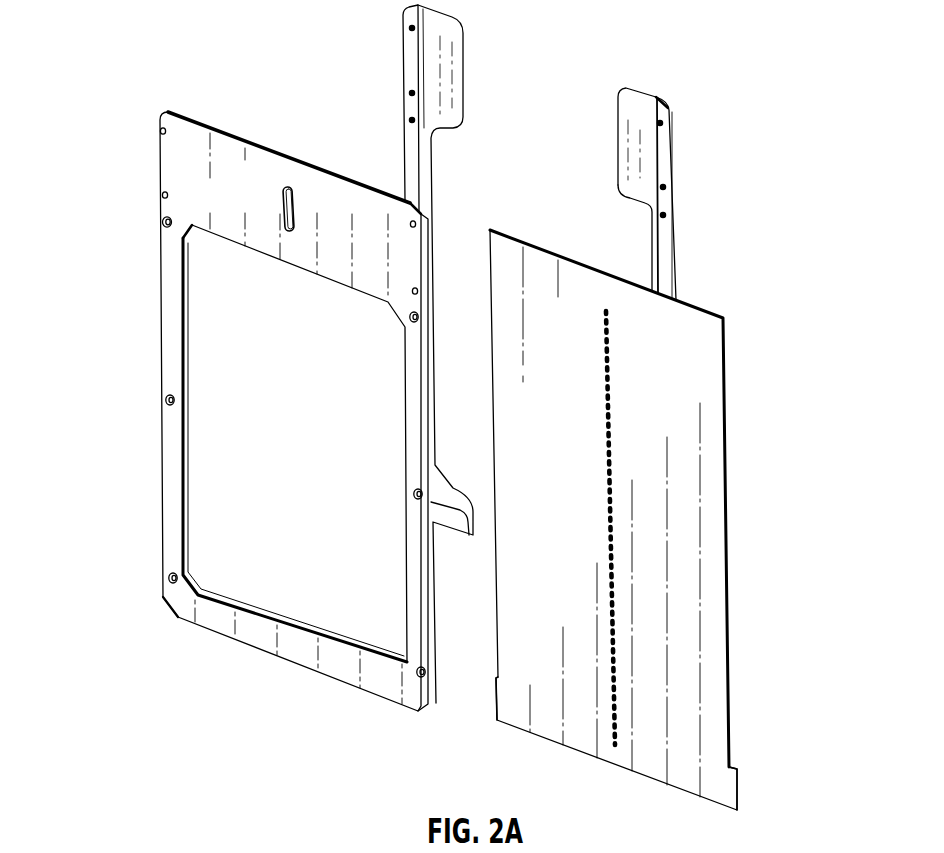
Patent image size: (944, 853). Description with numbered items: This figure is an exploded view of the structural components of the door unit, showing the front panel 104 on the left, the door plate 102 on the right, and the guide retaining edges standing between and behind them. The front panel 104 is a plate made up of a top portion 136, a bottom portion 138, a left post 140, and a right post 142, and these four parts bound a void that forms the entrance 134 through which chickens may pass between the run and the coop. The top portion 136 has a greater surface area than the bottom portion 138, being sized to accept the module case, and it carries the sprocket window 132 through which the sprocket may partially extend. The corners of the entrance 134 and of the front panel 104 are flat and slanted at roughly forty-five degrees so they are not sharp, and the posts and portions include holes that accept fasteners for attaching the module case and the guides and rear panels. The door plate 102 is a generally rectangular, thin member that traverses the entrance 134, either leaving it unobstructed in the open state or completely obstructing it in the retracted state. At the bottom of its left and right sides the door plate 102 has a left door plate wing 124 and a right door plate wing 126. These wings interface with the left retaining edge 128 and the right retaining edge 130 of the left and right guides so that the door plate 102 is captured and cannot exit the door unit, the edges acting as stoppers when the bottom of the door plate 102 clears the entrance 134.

The door plate 102 is at (639, 520).
The front panel 104 is at (257, 397).
The left door plate wing 124 is at (497, 707).
The right door plate wing 126 is at (737, 780).
The left retaining edge 128 is at (418, 78).
The right retaining edge 130 is at (652, 160).
The sprocket window 132 is at (288, 183).
The entrance 134 is at (208, 487).
The top portion 136 is at (233, 153).
The bottom portion 138 is at (250, 637).
The left post 140 is at (170, 368).
The right post 142 is at (415, 402).